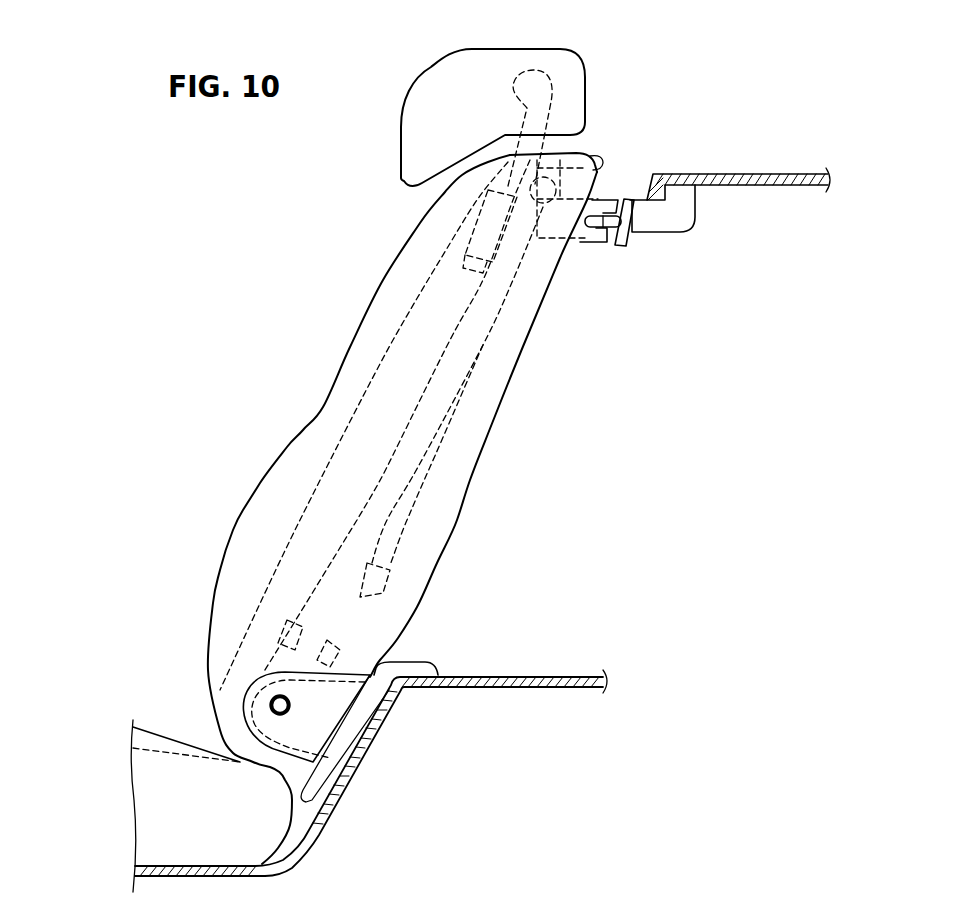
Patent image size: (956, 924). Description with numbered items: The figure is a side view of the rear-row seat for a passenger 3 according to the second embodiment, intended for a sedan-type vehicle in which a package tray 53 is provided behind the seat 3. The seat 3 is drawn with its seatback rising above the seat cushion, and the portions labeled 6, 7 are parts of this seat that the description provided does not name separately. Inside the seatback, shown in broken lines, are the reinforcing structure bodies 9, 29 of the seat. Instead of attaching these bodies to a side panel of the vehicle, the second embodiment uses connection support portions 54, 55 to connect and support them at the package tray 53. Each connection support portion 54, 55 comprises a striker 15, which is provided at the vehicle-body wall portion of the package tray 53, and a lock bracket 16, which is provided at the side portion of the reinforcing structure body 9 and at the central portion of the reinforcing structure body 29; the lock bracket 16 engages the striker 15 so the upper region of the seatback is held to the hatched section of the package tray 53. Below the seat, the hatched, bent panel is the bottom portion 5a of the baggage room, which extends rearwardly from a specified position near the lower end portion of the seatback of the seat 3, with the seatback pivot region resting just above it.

The seat for a passenger 3 is at (604, 68).
The seat back 6 is at (367, 522).
The seat back frame 7 is at (350, 347).
The reinforcing structure body 9 is at (430, 425).
The reinforcing structure body 29 is at (515, 283).
The striker 15 is at (626, 200).
The lock bracket 16 is at (580, 243).
The package tray 53 is at (768, 173).
The connection support portion 54 is at (668, 250).
The connection support portion 55 is at (620, 273).
The bottom portion 5a is at (512, 677).